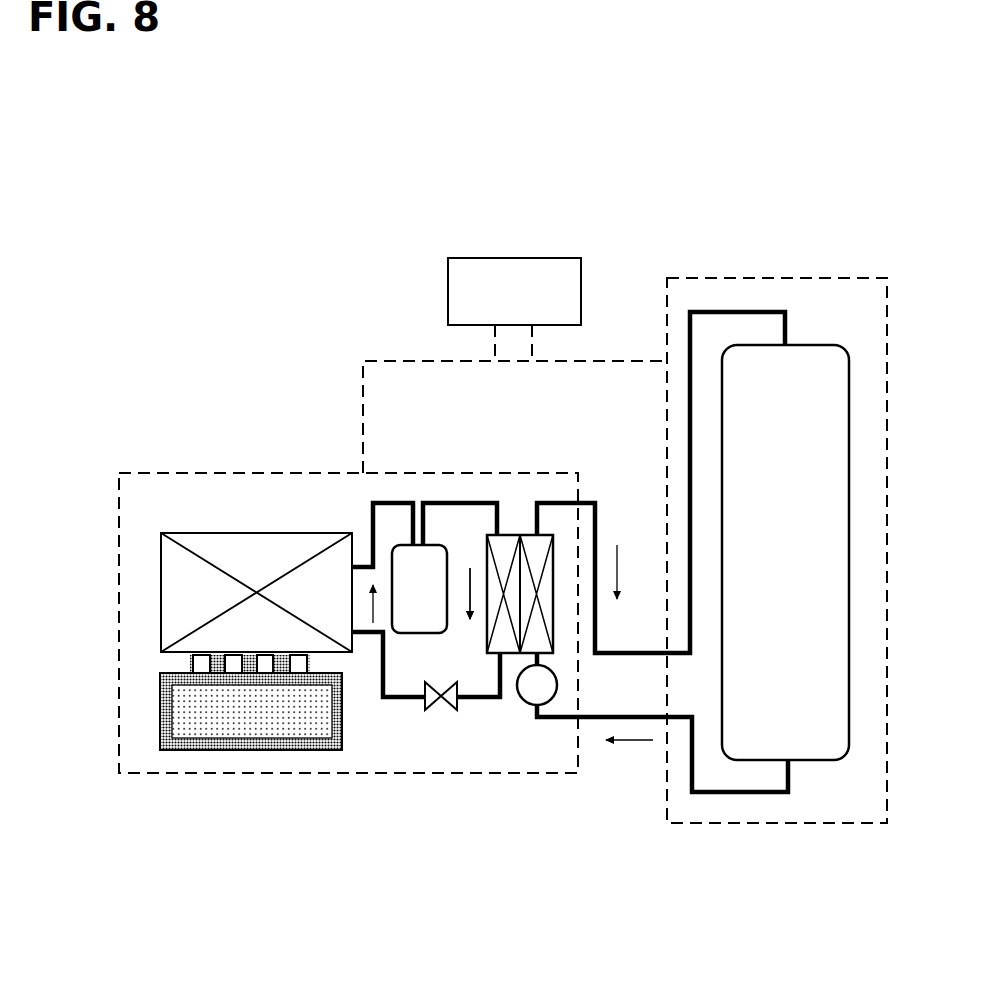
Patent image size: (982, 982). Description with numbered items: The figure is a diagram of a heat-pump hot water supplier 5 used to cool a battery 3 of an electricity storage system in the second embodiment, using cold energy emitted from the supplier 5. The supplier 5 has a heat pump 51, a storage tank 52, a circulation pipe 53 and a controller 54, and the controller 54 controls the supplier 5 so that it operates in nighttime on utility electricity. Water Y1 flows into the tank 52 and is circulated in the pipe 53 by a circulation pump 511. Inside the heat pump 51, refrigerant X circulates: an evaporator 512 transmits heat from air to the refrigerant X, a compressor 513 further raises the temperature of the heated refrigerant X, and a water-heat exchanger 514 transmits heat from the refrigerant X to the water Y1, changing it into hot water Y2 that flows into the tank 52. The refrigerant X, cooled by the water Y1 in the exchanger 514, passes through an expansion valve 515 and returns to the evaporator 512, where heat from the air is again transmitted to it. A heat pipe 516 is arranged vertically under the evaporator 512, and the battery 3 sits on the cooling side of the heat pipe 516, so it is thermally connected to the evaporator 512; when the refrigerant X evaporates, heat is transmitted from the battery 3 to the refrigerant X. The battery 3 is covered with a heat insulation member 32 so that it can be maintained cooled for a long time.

The battery 3 is at (240, 710).
The heat-pump hot water supplier 5 is at (624, 282).
The heat insulation member 32 is at (298, 750).
The heat pump 51 is at (252, 470).
The storage tank 52 is at (818, 367).
The circulation pipe 53 is at (742, 793).
The controller 54 is at (505, 258).
The circulation pump 511 is at (531, 707).
The evaporator 512 is at (187, 590).
The compressor 513 is at (512, 545).
The water-heat exchanger 514 is at (437, 575).
The expansion valve 515 is at (430, 712).
The heat pipe 516 is at (193, 663).
The refrigerant X is at (470, 598).
The water Y1 is at (622, 742).
The hot water Y2 is at (618, 565).